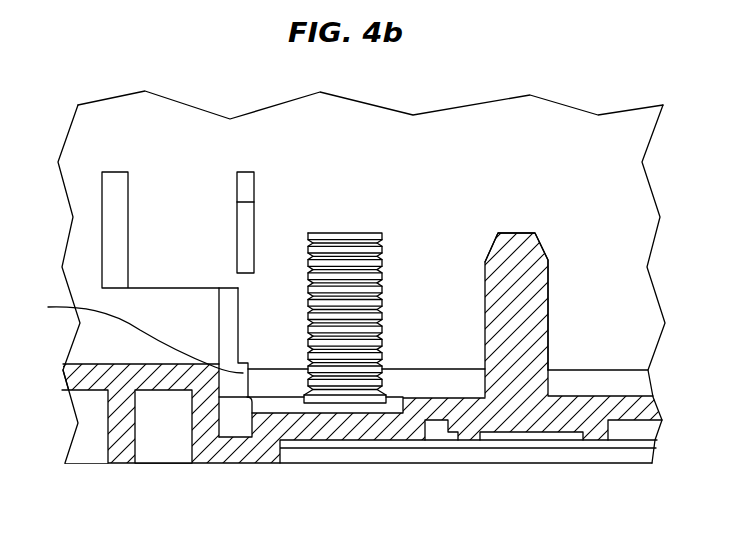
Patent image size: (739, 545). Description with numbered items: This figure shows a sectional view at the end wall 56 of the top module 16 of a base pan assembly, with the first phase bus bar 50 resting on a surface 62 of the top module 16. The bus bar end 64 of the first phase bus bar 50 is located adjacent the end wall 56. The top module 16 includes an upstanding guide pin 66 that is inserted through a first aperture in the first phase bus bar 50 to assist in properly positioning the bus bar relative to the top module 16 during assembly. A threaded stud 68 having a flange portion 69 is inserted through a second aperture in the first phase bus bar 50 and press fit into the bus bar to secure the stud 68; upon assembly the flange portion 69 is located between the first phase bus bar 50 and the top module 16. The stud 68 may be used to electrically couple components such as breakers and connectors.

The top module 16 is at (458, 463).
The first phase bus bar 50 is at (600, 368).
The end wall 56 is at (136, 334).
The surface 62 is at (253, 463).
The bus bar end 64 is at (254, 465).
The upstanding guide pin 66 is at (540, 243).
The threaded stud 68 is at (358, 232).
The flange portion 69 is at (348, 404).